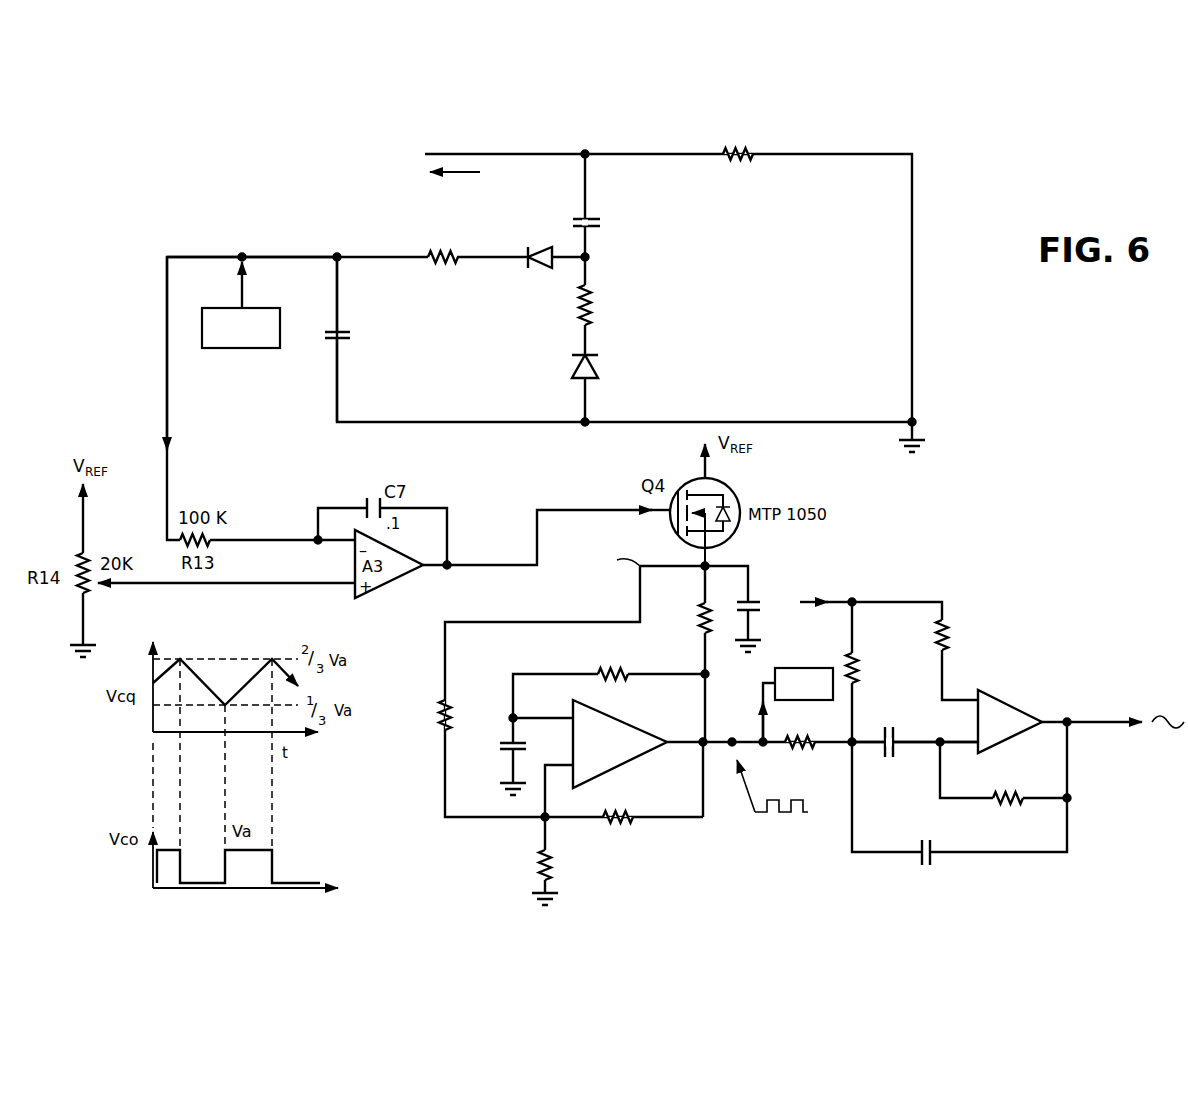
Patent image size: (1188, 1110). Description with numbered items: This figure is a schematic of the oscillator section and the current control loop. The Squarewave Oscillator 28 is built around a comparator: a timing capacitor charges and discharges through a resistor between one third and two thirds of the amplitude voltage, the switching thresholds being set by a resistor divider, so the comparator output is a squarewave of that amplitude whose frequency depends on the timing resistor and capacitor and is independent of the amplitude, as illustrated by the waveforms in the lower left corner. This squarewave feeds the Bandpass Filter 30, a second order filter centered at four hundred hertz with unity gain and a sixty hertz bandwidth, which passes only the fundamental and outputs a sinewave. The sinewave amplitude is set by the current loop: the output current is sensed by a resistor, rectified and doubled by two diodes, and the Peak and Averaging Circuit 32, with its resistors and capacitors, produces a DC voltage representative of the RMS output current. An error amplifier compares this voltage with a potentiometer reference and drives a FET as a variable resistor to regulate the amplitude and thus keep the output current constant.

The Squarewave Oscillator 28 is at (390, 789).
The Bandpass Filter 30 is at (970, 604).
The Peak and Averaging Circuit 32 is at (190, 228).